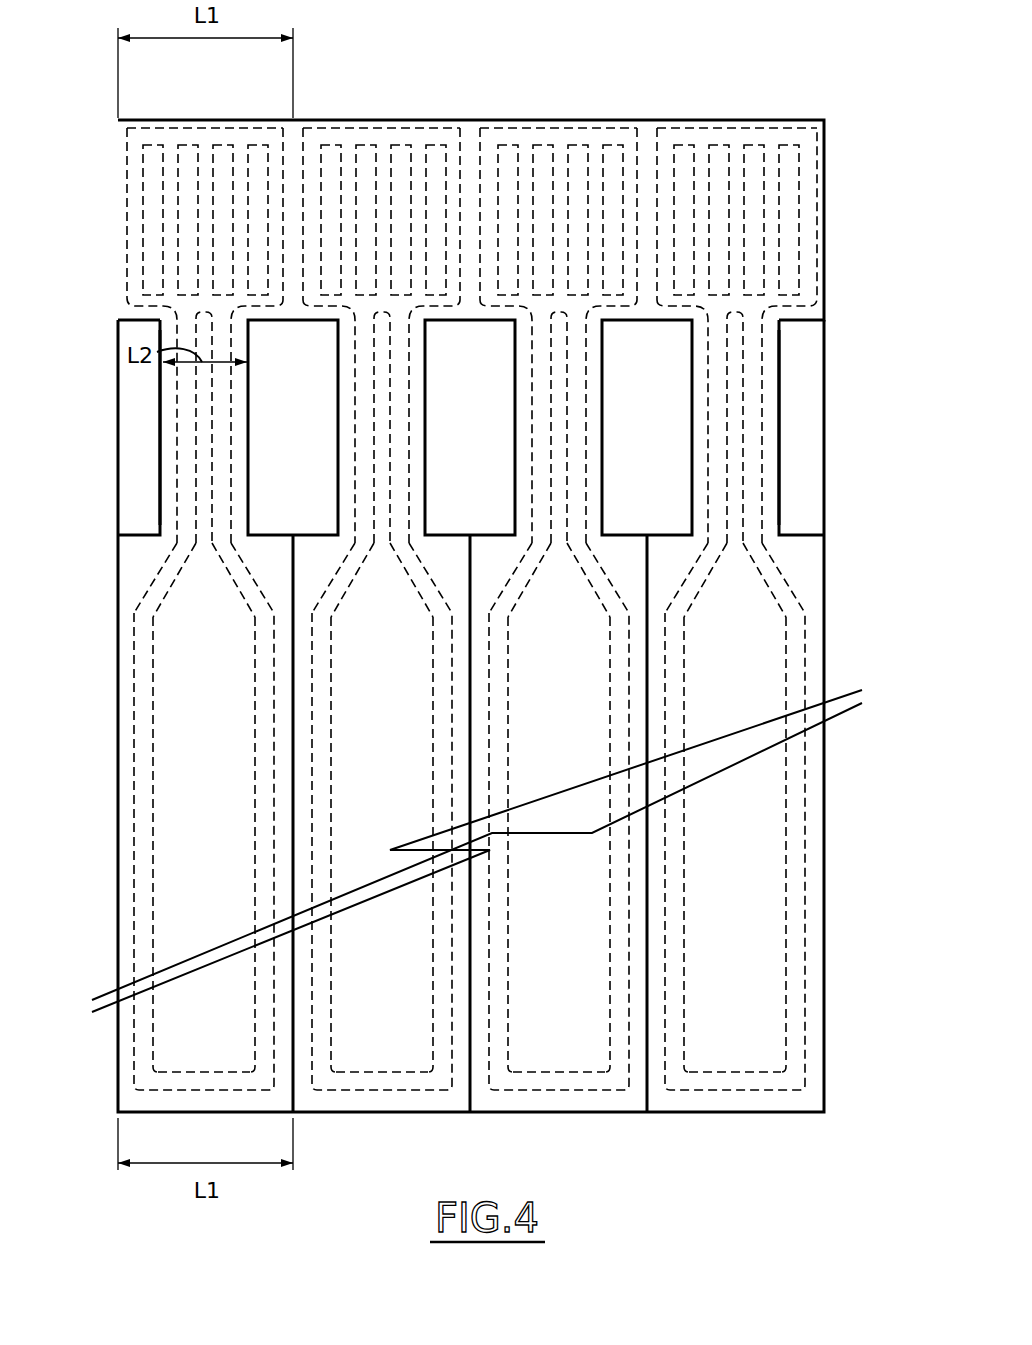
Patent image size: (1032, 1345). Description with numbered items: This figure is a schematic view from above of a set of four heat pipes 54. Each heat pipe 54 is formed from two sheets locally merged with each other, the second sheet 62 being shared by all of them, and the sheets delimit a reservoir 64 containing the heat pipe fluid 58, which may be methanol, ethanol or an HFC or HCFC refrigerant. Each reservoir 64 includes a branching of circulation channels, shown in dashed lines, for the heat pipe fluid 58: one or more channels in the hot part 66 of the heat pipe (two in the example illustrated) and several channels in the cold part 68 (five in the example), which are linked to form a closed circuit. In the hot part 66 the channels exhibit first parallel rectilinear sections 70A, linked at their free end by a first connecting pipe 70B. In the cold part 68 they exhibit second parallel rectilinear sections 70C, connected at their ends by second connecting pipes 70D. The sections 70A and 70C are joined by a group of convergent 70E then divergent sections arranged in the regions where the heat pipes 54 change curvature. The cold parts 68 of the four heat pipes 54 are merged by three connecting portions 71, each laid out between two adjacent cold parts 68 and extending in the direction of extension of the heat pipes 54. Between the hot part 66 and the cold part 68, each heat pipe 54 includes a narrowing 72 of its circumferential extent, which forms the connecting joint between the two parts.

The heat pipe 54 is at (150, 435).
The heat pipe fluid 58 is at (258, 740).
The second sheet 62 is at (834, 152).
The reservoir 64 is at (325, 578).
The hot part 66 is at (752, 907).
The cold part 68 is at (187, 196).
The first parallel rectilinear sections 70A is at (607, 703).
The first connecting pipe 70B is at (198, 1072).
The second parallel rectilinear sections 70C is at (197, 268).
The second connecting pipes 70D is at (233, 127).
The convergent sections 70E is at (357, 446).
The connecting portion 71 is at (298, 200).
The narrowing 72 is at (337, 448).